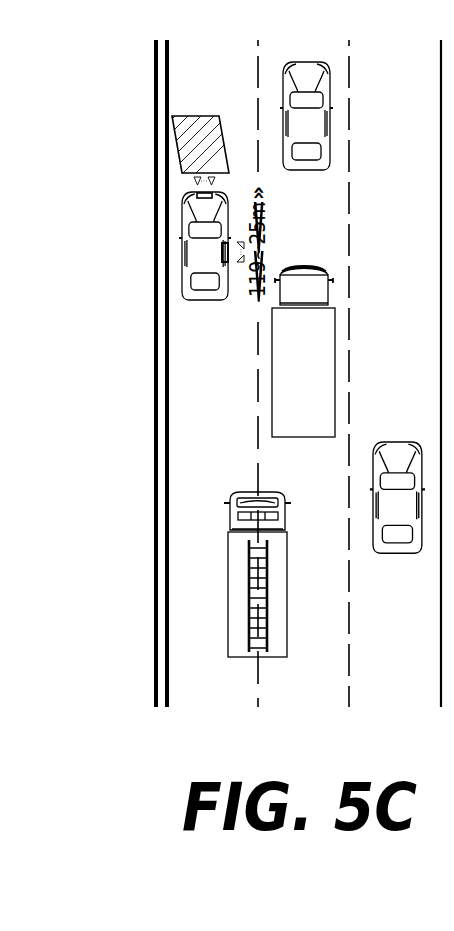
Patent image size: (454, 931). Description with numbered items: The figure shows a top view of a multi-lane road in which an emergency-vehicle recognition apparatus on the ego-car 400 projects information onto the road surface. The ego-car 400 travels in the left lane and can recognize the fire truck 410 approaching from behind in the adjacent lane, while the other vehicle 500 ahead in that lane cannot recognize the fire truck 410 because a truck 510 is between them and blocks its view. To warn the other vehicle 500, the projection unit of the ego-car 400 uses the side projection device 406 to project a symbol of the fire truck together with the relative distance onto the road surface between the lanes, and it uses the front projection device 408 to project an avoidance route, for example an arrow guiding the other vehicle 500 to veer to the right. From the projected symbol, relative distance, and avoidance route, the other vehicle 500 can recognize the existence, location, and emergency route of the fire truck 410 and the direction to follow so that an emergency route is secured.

The ego-car 400 is at (183, 280).
The side projection device 406 is at (222, 256).
The front projection device 408 is at (190, 197).
The fire truck 410 is at (243, 657).
The other vehicle 500 is at (328, 145).
The truck 510 is at (333, 357).